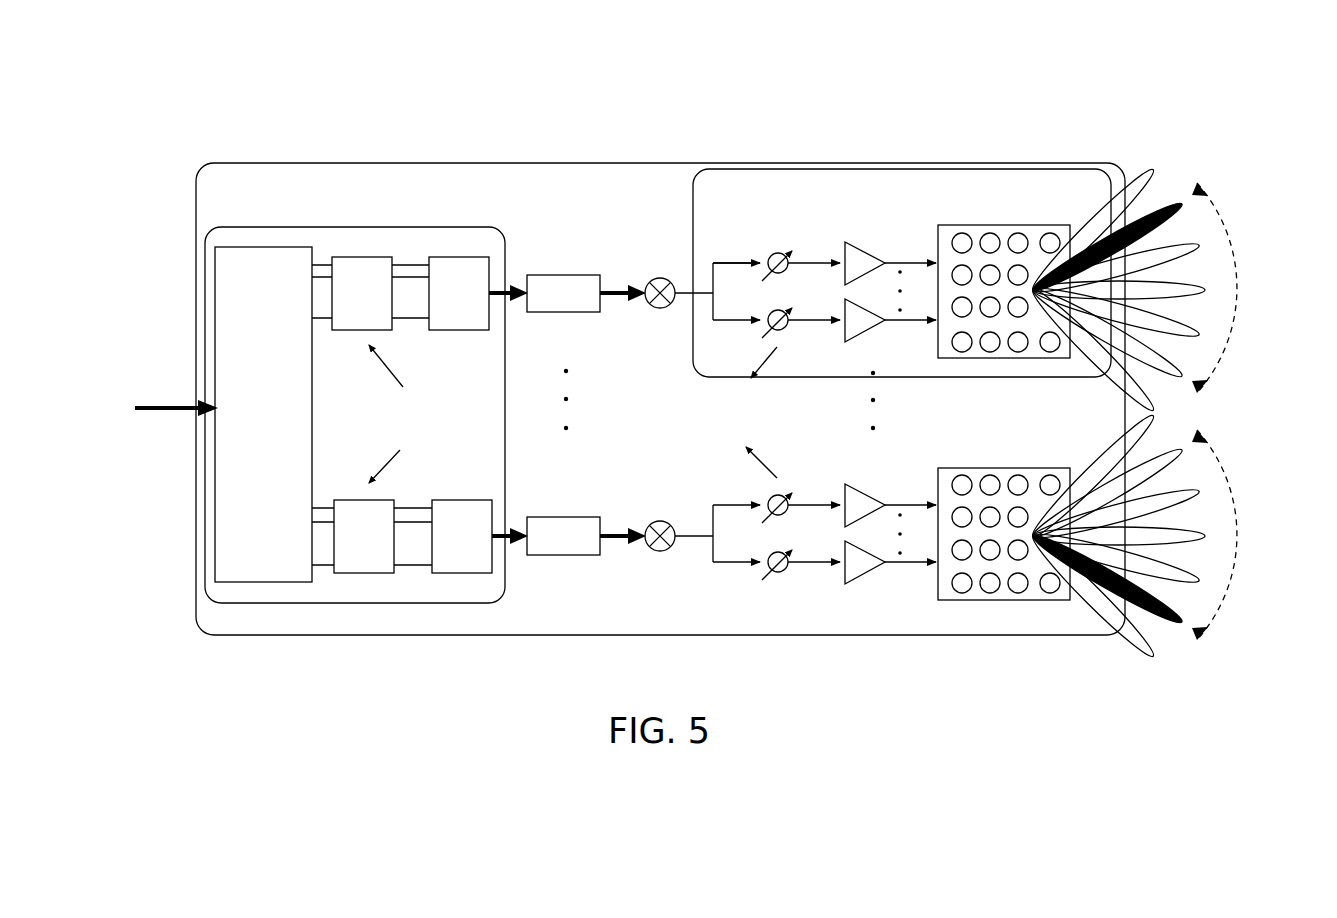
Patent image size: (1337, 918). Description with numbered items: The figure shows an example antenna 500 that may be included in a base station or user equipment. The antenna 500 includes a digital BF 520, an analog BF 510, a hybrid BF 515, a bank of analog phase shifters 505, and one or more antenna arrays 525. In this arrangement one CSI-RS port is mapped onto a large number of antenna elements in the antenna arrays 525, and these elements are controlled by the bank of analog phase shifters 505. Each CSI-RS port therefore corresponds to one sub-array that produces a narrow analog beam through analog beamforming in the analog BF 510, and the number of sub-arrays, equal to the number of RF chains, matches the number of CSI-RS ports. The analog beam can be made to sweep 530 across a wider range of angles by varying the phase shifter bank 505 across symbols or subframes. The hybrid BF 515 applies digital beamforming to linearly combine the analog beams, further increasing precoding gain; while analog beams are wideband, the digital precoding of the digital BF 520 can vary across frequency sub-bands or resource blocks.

The antenna 500 is at (258, 60).
The analog phase shifters 505 is at (688, 414).
The analog beamformer 510 is at (692, 236).
The hybrid beamformer 515 is at (790, 615).
The digital beamformer 520 is at (322, 228).
The antenna arrays 525 is at (937, 236).
The sweep 530 is at (1237, 258).